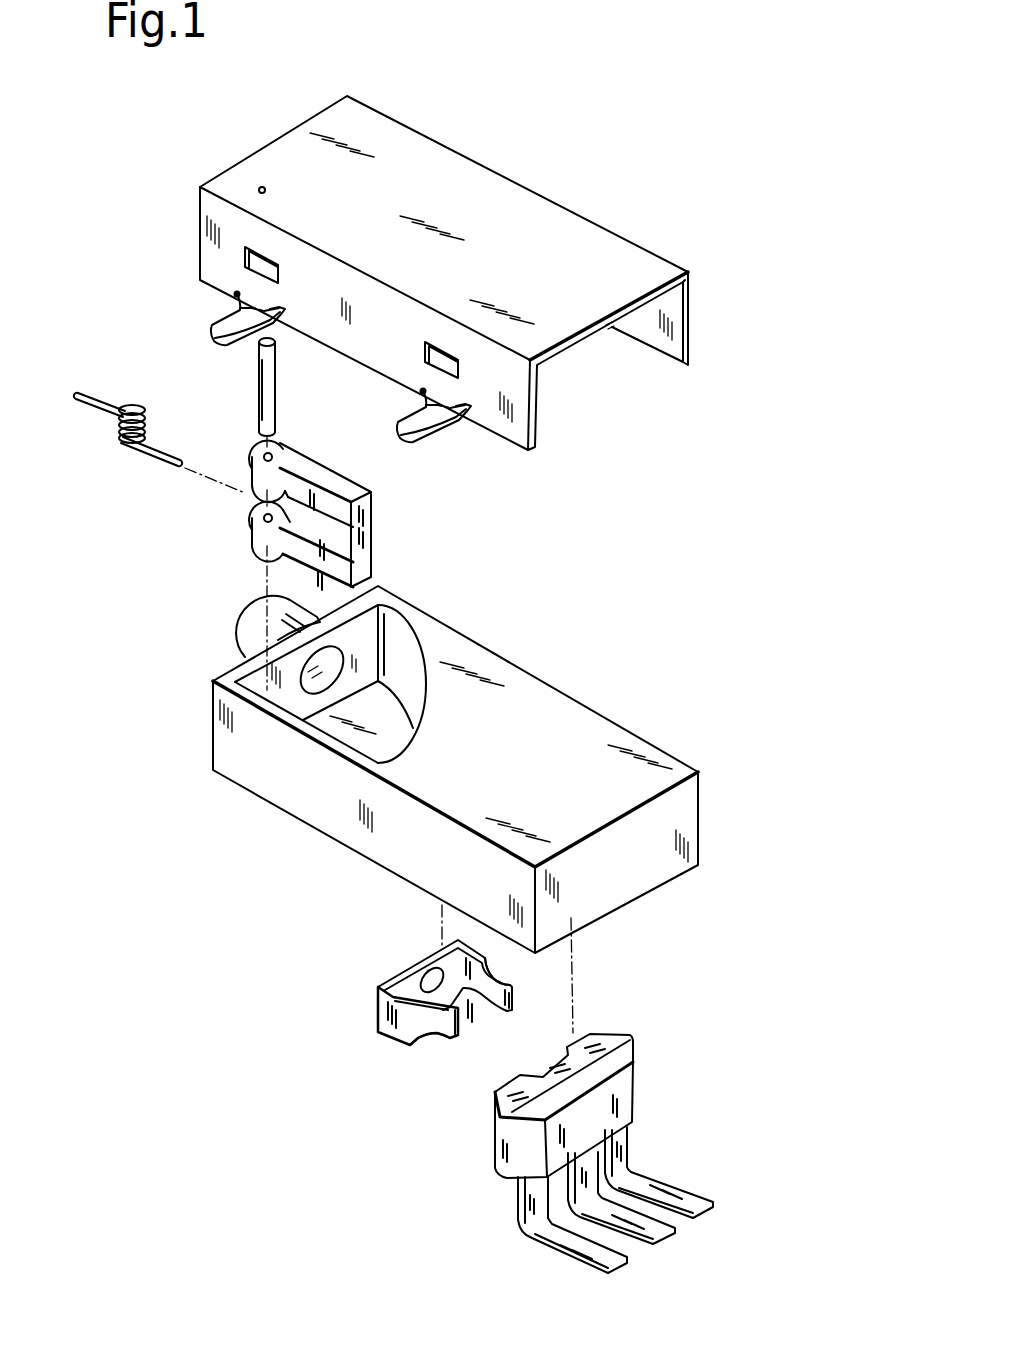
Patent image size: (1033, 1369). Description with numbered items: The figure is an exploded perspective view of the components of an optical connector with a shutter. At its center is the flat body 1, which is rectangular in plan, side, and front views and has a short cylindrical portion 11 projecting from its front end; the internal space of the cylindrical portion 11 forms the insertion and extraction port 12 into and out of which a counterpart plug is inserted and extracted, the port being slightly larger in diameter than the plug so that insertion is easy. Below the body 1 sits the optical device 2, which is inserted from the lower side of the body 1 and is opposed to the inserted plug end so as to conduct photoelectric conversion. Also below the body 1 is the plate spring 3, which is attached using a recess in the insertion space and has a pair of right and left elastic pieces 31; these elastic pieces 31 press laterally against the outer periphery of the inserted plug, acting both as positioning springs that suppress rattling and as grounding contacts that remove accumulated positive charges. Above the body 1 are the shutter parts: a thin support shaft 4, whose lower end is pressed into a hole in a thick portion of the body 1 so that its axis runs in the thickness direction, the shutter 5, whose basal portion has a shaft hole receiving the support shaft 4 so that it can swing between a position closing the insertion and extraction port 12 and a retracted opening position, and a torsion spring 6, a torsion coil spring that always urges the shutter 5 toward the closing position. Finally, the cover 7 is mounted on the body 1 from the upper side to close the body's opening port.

The body 1 is at (564, 696).
The optical device 2 is at (628, 1090).
The plate spring 3 is at (403, 977).
The elastic pieces 31 is at (500, 973).
The support shaft 4 is at (260, 373).
The shutter 5 is at (343, 477).
The torsion spring 6 is at (122, 441).
The cover 7 is at (462, 170).
The cylindrical portion 11 is at (248, 632).
The insertion and extraction port 12 is at (312, 681).